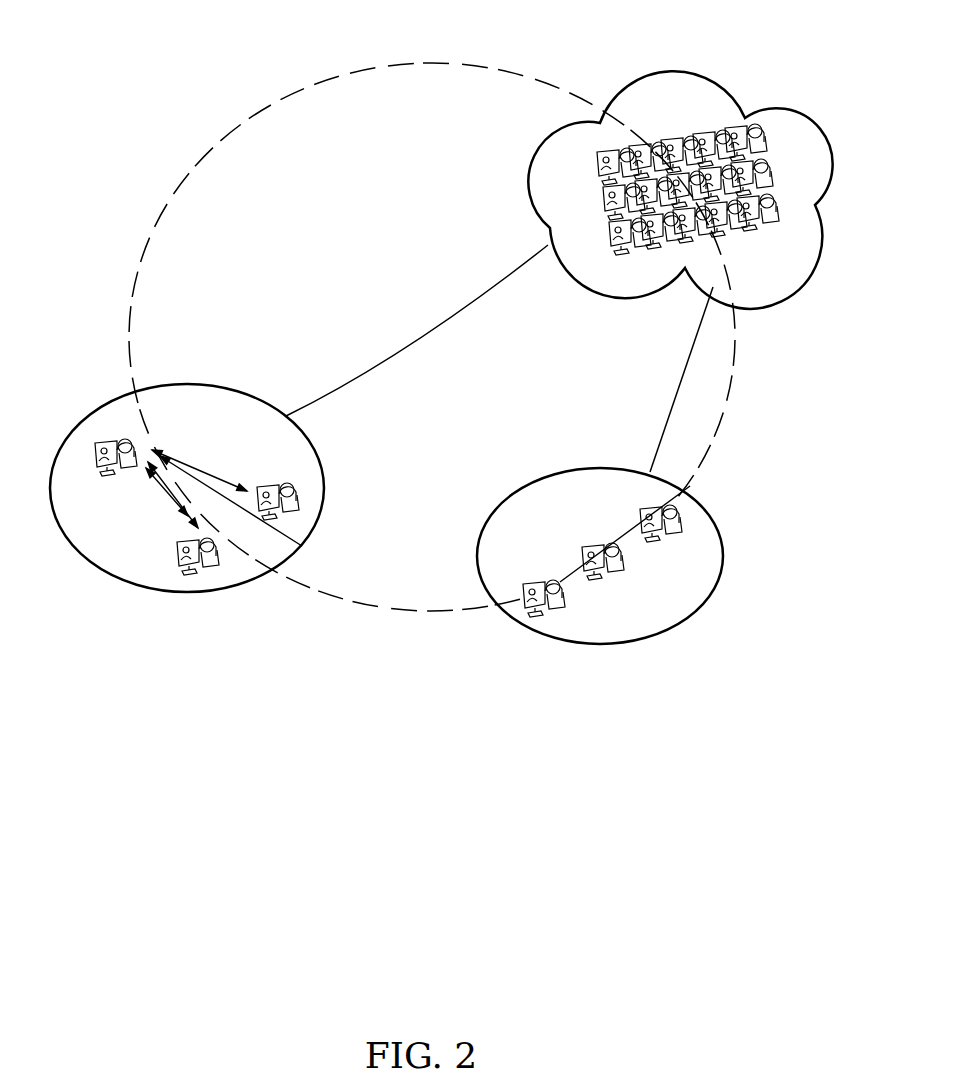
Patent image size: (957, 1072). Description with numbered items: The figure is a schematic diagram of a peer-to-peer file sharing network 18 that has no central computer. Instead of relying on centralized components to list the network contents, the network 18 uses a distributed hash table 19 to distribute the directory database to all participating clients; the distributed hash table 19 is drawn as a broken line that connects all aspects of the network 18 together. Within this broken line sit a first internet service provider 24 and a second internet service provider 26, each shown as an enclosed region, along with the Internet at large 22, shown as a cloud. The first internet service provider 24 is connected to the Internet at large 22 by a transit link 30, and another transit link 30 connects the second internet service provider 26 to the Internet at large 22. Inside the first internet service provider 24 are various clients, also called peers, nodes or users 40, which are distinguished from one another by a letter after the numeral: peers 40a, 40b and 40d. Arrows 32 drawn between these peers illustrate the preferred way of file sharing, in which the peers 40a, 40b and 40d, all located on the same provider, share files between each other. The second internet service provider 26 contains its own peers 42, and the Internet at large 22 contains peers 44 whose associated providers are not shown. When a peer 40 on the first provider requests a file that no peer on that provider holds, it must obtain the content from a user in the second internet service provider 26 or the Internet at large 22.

The peer-to-peer file sharing network 18 is at (172, 163).
The distributed hash table 19 is at (301, 86).
The Internet at large 22 is at (583, 34).
The first internet service provider 24 is at (197, 384).
The second internet service provider 26 is at (723, 551).
The transit link 30 is at (414, 341).
The arrows 32 is at (170, 498).
The peers 40 is at (174, 419).
The peer 40a is at (288, 508).
The peer 40b is at (212, 562).
The peer 40d is at (97, 455).
The peers 42 is at (628, 581).
The peers 44 is at (768, 119).